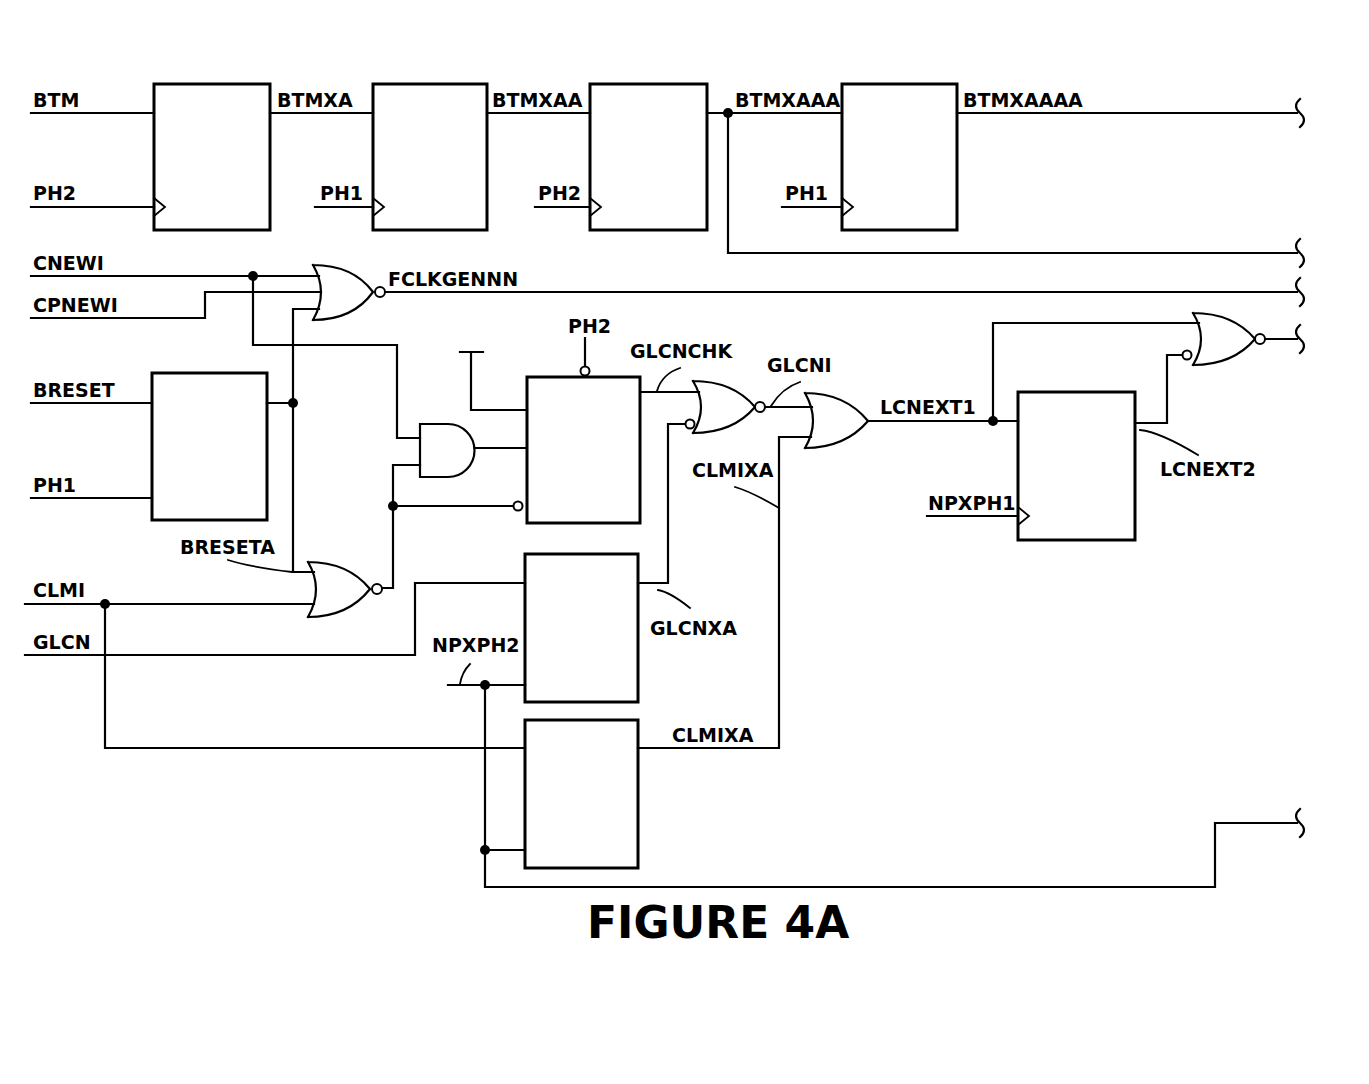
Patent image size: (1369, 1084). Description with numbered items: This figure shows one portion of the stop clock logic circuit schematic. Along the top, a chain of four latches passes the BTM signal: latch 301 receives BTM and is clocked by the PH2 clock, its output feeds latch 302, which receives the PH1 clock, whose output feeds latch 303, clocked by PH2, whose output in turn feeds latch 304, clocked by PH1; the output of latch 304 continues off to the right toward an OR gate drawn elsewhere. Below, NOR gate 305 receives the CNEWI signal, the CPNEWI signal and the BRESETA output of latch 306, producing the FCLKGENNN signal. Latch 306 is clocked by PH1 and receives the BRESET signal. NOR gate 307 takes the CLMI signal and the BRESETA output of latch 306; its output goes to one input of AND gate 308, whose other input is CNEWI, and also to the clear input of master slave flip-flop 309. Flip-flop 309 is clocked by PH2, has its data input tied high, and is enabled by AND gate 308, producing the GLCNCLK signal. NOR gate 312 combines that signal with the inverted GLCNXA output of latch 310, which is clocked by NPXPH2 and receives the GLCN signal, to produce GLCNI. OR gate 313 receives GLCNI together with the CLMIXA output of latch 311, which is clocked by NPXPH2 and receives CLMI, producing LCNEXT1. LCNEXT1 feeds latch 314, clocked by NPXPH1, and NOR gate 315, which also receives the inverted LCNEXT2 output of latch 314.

The latch 301 is at (231, 200).
The latch 302 is at (449, 200).
The latch 303 is at (667, 200).
The latch 304 is at (919, 200).
The NOR gate 305 is at (360, 305).
The latch 306 is at (229, 490).
The NOR gate 307 is at (356, 602).
The AND gate 308 is at (460, 461).
The master slave flip-flop 309 is at (621, 487).
The latch 310 is at (601, 670).
The latch 311 is at (601, 836).
The NOR gate 312 is at (740, 420).
The OR gate 313 is at (852, 434).
The latch 314 is at (1095, 508).
The NOR gate 315 is at (1240, 352).